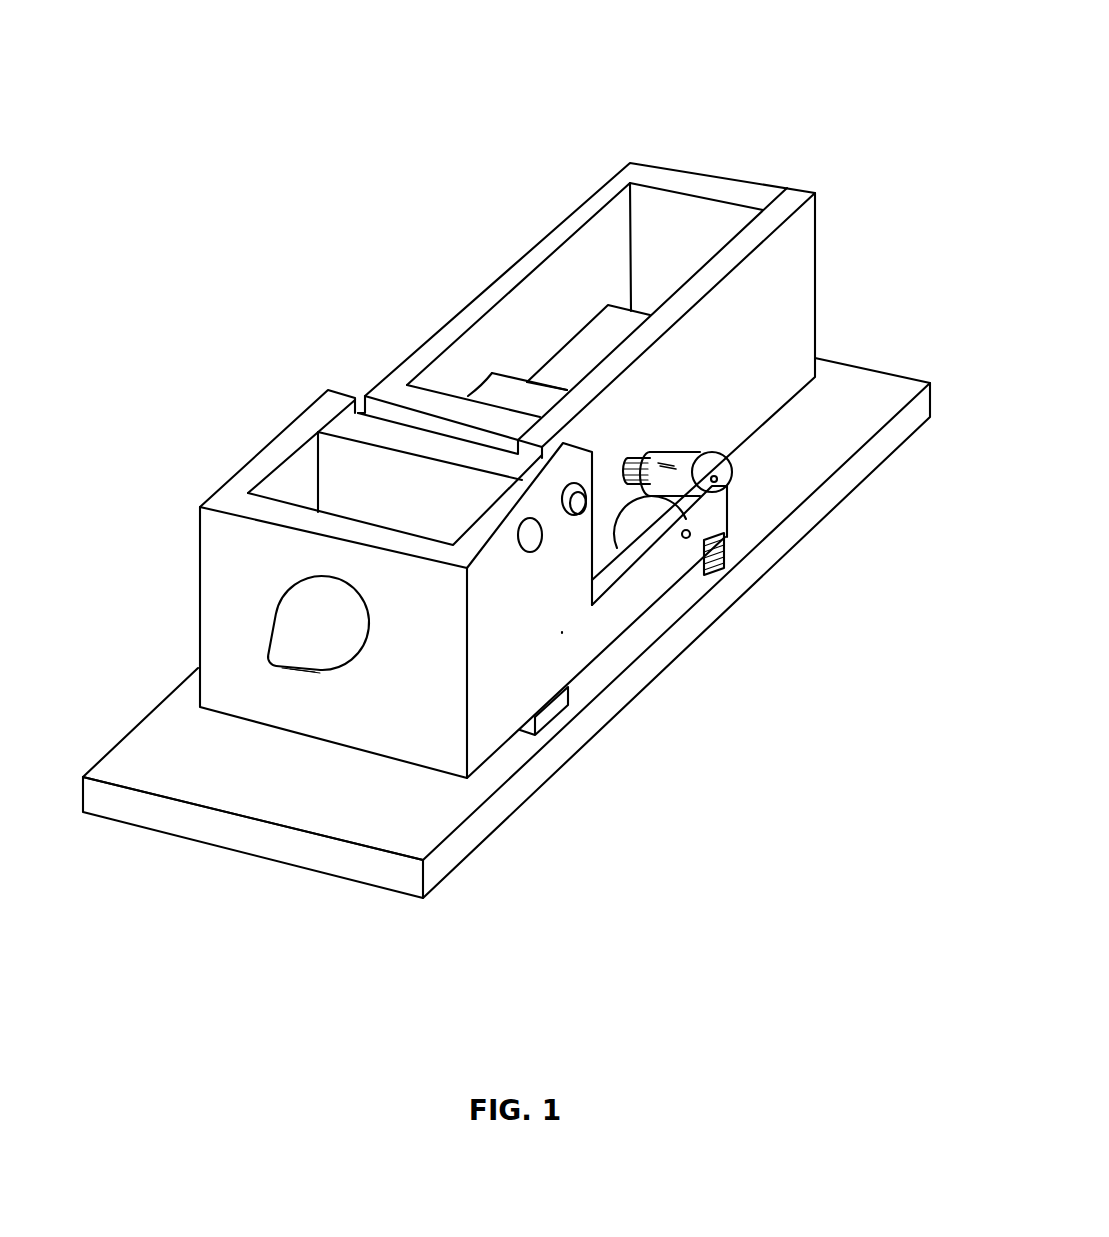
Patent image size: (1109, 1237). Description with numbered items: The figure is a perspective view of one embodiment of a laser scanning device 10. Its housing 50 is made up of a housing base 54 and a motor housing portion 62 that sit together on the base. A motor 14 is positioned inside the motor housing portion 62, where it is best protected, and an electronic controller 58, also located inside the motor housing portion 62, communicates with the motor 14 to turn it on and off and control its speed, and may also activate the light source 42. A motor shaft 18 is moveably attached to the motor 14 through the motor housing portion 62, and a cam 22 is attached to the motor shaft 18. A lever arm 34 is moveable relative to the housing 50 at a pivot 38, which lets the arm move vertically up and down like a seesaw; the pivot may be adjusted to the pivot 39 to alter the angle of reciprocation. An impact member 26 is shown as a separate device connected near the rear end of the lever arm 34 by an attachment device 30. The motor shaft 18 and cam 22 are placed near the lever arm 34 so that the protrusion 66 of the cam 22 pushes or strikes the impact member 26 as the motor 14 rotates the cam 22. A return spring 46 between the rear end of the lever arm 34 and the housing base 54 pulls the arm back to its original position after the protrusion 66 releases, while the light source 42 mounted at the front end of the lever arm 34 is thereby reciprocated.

The laser scanning device 10 is at (849, 124).
The motor 14 is at (495, 387).
The motor shaft 18 is at (641, 463).
The cam 22 is at (733, 472).
The impact member 26 is at (687, 540).
The attachment device 30 is at (642, 525).
The lever arm 34 is at (562, 632).
The pivot 38 is at (575, 505).
The pivot 39 is at (527, 547).
The light source 42 is at (343, 650).
The return spring 46 is at (723, 558).
The housing 50 is at (353, 430).
The housing base 54 is at (263, 843).
The controller 58 is at (580, 337).
The motor housing portion 62 is at (708, 185).
The protrusion 66 is at (680, 465).